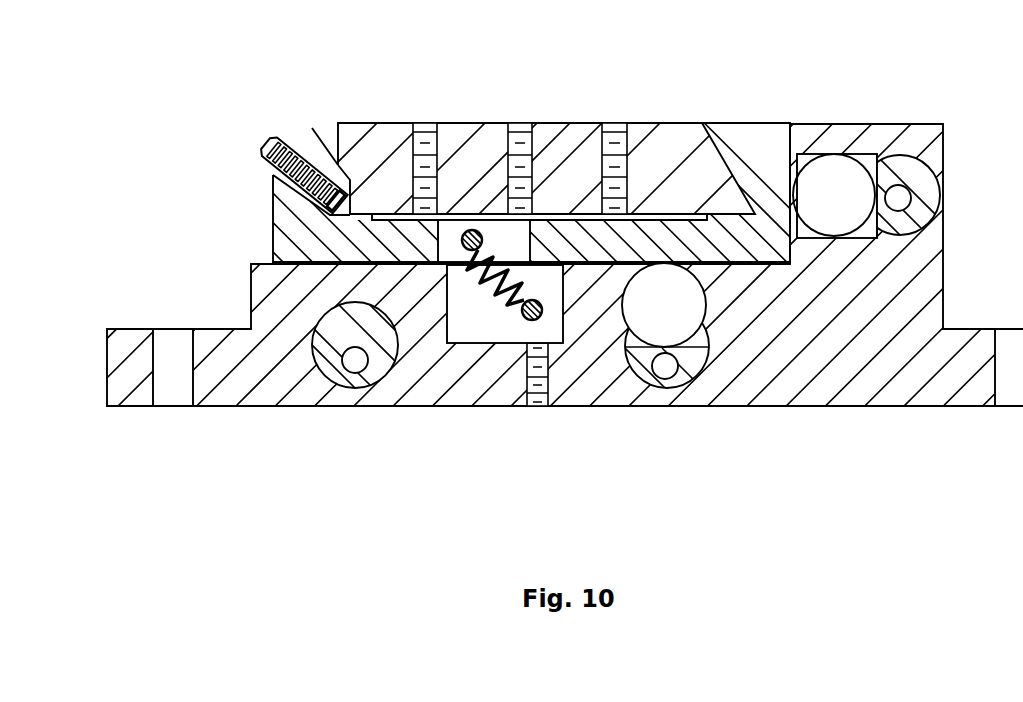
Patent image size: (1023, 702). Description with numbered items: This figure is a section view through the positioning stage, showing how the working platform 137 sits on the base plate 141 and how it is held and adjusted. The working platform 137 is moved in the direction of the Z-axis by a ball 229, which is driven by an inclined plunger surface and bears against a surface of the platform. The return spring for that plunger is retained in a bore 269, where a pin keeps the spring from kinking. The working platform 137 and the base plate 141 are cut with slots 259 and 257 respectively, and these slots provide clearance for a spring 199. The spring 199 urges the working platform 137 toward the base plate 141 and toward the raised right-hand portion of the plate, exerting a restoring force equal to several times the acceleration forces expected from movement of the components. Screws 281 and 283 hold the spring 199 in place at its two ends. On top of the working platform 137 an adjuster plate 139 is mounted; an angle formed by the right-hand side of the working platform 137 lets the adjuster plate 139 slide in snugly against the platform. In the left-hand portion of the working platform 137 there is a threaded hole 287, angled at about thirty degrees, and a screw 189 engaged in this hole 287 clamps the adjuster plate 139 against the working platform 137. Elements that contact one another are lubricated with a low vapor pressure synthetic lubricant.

The base plate 141 is at (133, 327).
The threaded hole 287 is at (300, 137).
The working platform 137 is at (738, 124).
The adjuster plate 139 is at (658, 122).
The screw 189 is at (258, 150).
The slot 259 is at (498, 233).
The slot 257 is at (493, 336).
The spring 199 is at (483, 293).
The screw 281 is at (473, 228).
The screw 283 is at (543, 313).
The ball 229 is at (830, 168).
The bore 269 is at (903, 172).